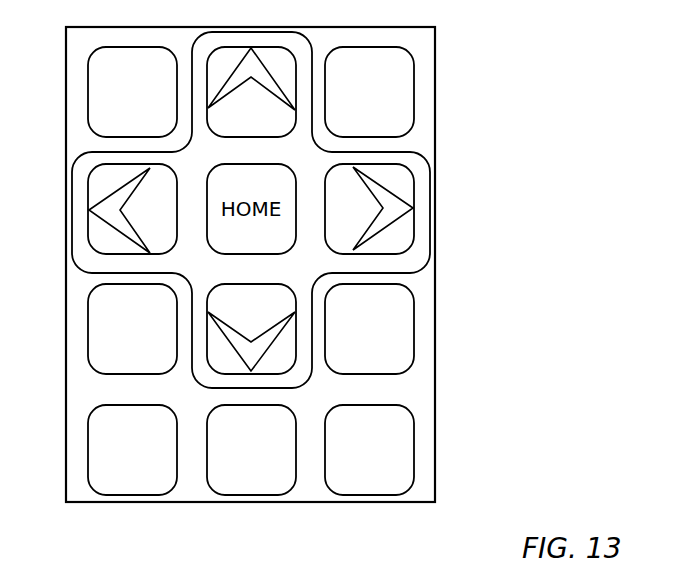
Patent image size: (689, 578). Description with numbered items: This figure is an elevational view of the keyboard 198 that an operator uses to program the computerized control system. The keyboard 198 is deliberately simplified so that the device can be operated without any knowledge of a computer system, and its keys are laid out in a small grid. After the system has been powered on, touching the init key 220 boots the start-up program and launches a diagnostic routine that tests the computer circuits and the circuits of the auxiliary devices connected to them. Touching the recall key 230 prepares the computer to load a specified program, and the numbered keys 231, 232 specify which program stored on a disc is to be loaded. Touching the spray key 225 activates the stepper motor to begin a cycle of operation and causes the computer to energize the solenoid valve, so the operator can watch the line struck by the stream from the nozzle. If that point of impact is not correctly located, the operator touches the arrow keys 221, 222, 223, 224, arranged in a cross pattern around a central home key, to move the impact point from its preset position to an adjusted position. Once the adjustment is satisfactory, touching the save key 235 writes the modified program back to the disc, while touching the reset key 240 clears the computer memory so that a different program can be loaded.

The keyboard 198 is at (480, 128).
The init key 220 is at (103, 82).
The adjustment key 221 is at (222, 63).
The adjustment key 222 is at (265, 362).
The adjustment key 223 is at (98, 187).
The adjustment key 224 is at (397, 235).
The spray key 225 is at (105, 306).
The recall key 230 is at (400, 353).
The program selection key 231 is at (110, 441).
The program selection key 232 is at (278, 486).
The save key 235 is at (405, 467).
The reset key 240 is at (400, 73).